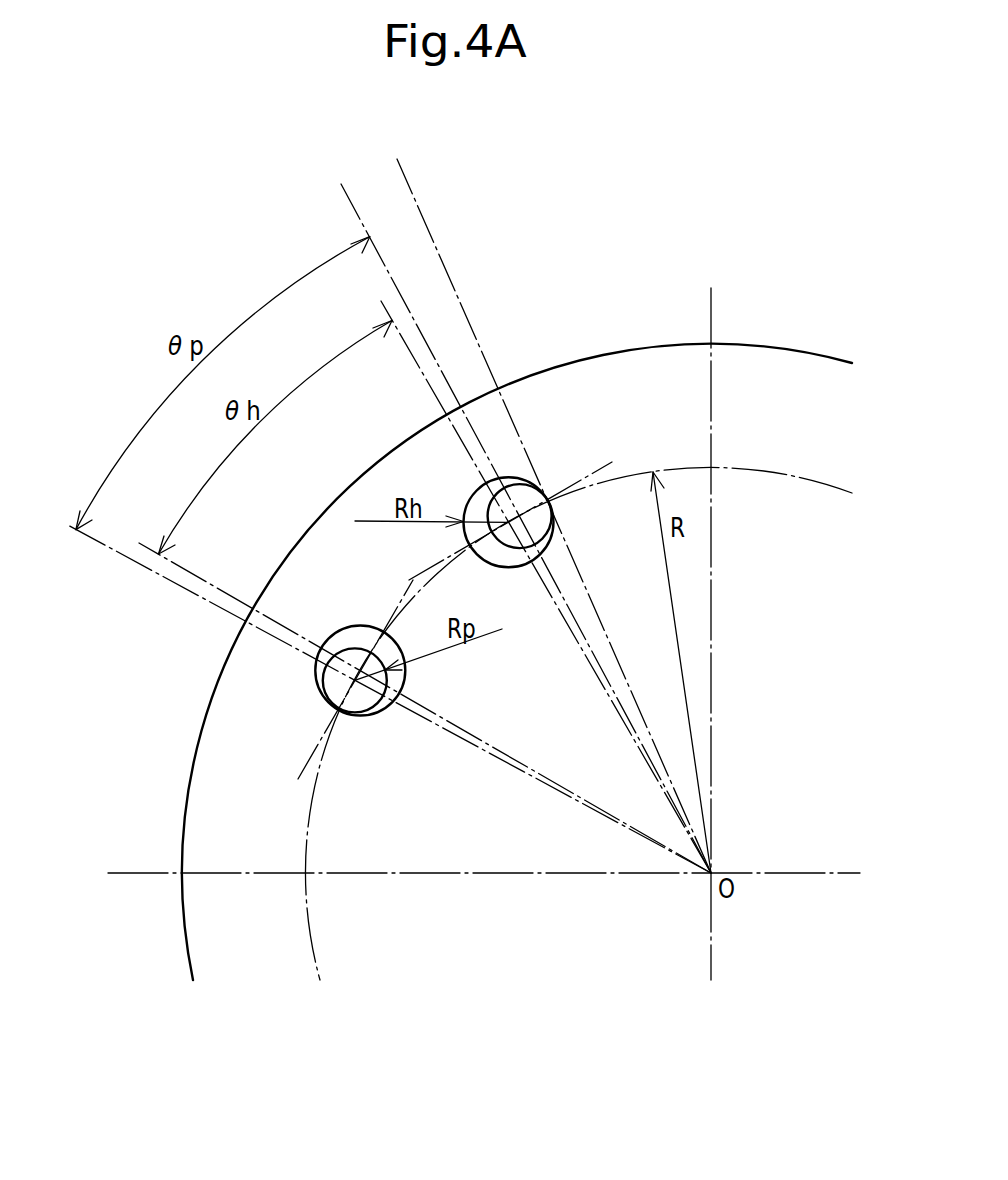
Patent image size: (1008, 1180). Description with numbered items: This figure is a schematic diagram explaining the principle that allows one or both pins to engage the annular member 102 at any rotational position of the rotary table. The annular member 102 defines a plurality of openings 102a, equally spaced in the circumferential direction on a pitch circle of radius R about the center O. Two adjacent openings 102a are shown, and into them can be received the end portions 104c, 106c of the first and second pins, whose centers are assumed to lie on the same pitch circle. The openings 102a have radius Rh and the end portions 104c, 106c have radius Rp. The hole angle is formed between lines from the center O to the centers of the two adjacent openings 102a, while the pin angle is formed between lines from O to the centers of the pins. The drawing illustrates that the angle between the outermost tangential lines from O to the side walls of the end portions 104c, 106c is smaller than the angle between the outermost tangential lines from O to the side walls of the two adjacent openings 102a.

The annular member 102 is at (787, 336).
The openings 102a is at (356, 627).
The end portion of the first pin 104c is at (326, 694).
The end portion of the second pin 106c is at (530, 487).